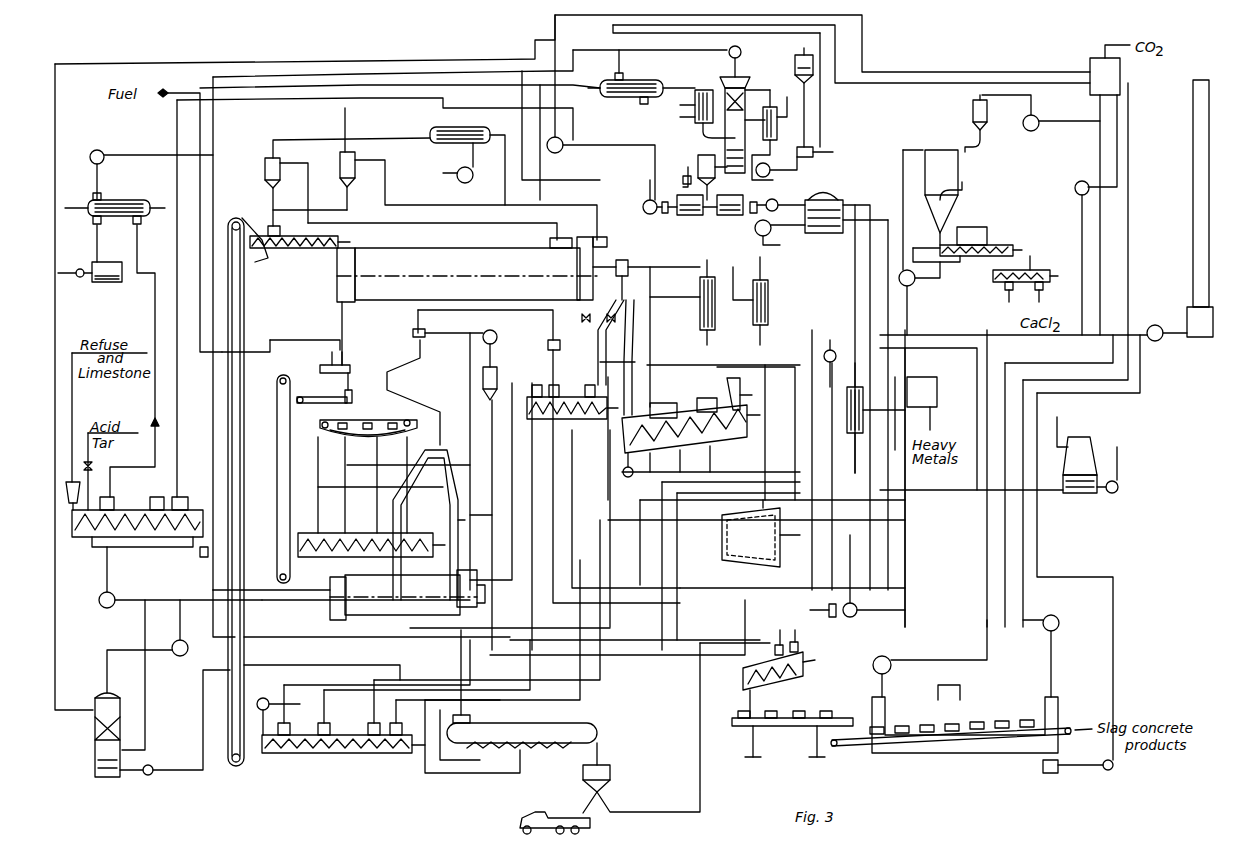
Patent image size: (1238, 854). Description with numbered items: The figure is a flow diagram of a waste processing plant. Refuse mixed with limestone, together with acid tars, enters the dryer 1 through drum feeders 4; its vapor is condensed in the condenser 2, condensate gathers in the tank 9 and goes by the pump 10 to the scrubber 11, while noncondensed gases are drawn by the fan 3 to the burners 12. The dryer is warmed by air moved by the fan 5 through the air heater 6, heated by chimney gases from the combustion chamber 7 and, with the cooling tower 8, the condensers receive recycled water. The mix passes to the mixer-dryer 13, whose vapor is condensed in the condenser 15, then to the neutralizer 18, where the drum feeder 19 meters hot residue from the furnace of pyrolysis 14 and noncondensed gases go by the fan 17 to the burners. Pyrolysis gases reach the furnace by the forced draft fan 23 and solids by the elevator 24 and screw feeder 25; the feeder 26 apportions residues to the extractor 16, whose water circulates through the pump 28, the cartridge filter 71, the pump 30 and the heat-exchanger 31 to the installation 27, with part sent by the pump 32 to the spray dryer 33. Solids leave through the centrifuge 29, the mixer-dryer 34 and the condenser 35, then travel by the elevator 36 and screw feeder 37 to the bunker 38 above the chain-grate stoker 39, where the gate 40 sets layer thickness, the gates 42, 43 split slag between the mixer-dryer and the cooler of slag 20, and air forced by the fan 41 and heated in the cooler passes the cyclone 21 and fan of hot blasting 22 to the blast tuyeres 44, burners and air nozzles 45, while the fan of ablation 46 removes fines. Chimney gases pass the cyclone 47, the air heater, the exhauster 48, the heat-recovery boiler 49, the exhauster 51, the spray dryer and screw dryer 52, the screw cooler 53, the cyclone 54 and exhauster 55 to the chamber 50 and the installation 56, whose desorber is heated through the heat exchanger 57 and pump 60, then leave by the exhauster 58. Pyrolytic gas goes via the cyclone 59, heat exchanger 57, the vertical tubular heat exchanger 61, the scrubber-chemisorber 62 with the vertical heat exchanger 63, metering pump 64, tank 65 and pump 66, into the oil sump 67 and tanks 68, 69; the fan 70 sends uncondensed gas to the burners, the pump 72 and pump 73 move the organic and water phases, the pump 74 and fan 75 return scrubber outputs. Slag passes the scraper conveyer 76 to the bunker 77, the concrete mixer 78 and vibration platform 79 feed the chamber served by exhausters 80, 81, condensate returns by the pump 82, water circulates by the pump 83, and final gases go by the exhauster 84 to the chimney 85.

The dryer 1 is at (140, 544).
The condenser 2 is at (115, 199).
The fan 3 is at (141, 166).
The drum feeders 4 is at (127, 402).
The fan 5 is at (458, 186).
The air heater 6 is at (460, 166).
The combustion chamber 7 is at (470, 377).
The cooling tower 8 is at (1077, 467).
The tank 9 is at (107, 266).
The pump 10 is at (75, 288).
The scrubber 11 is at (100, 688).
The burners 12 is at (286, 343).
The mixer-dryer 13 is at (572, 412).
The furnace of pyrolysis 14 is at (472, 294).
The condenser 15 is at (682, 302).
The extractor 16 is at (711, 383).
The fan 17 is at (646, 280).
The neutralizer 18 is at (343, 729).
The drum feeder 19 is at (613, 357).
The cooler of slag 20 is at (407, 597).
The cyclone 21 is at (497, 438).
The fan of hot blasting 22 is at (474, 339).
The forced draft fan 23 is at (275, 716).
The elevator 24 is at (238, 492).
The screw feeder 25 is at (300, 233).
The feeder 26 is at (616, 315).
The installation for separating circulating water from heavy metals 27 is at (916, 413).
The pump 28 is at (631, 479).
The centrifuge 29 is at (750, 533).
The pump 30 is at (874, 576).
The heat-exchanger 31 is at (862, 418).
The pump 32 is at (824, 351).
The spray dryer 33 is at (932, 195).
The mixer-dryer 34 is at (369, 528).
The condenser 35 is at (764, 301).
The elevator 36 is at (297, 479).
The screw feeder 37 is at (316, 417).
The bunker 38 is at (352, 444).
The chain-grate stoker 39 is at (361, 449).
The gate 40 is at (360, 374).
The fan 41 is at (164, 616).
The gate 42 is at (425, 521).
The gate 43 is at (459, 477).
The blast tuyeres 44 is at (367, 409).
The air nozzles 45 is at (435, 343).
The fan of ablation 46 is at (543, 339).
The cyclone 47 is at (328, 180).
The exhauster 48 is at (780, 234).
The heat-recovery boiler 49 is at (846, 392).
The chamber of thermohumid processing of concrete 50 is at (961, 730).
The exhauster 51 is at (925, 298).
The screw dryer 52 is at (978, 234).
The screw cooler 53 is at (1013, 279).
The cyclone 54 is at (958, 121).
The exhauster 55 is at (1041, 111).
The installation for manufacturing of carbon dioxide 56 is at (1109, 190).
The heat exchanger 57 is at (641, 84).
The exhauster 58 is at (1084, 243).
The cyclone 59 is at (468, 196).
The pump 60 is at (601, 158).
The vertical tubular heat exchanger 61 is at (695, 116).
The scrubber-chemisorber 62 is at (731, 117).
The vertical heat exchanger 63 is at (766, 121).
The metering pump 64 is at (827, 144).
The tank 65 is at (786, 93).
The pump 66 is at (778, 151).
The oil sump 67 is at (693, 172).
The tank 68 is at (705, 223).
The tank 69 is at (674, 176).
The fan 70 is at (698, 61).
The cartridge filter 71 is at (779, 409).
The pump 72 is at (651, 215).
The pump 73 is at (787, 191).
The pump 74 is at (186, 736).
The fan 75 is at (147, 648).
The scraper conveyer 76 is at (533, 701).
The bunker 77 is at (641, 728).
The concrete mixer 78 is at (757, 677).
The vibration platform 79 is at (792, 726).
The exhauster 80 is at (911, 658).
The exhauster 81 is at (1058, 648).
The pump 82 is at (1085, 781).
The pump 83 is at (1128, 470).
The exhauster 84 is at (1033, 310).
The chimney 85 is at (1181, 208).